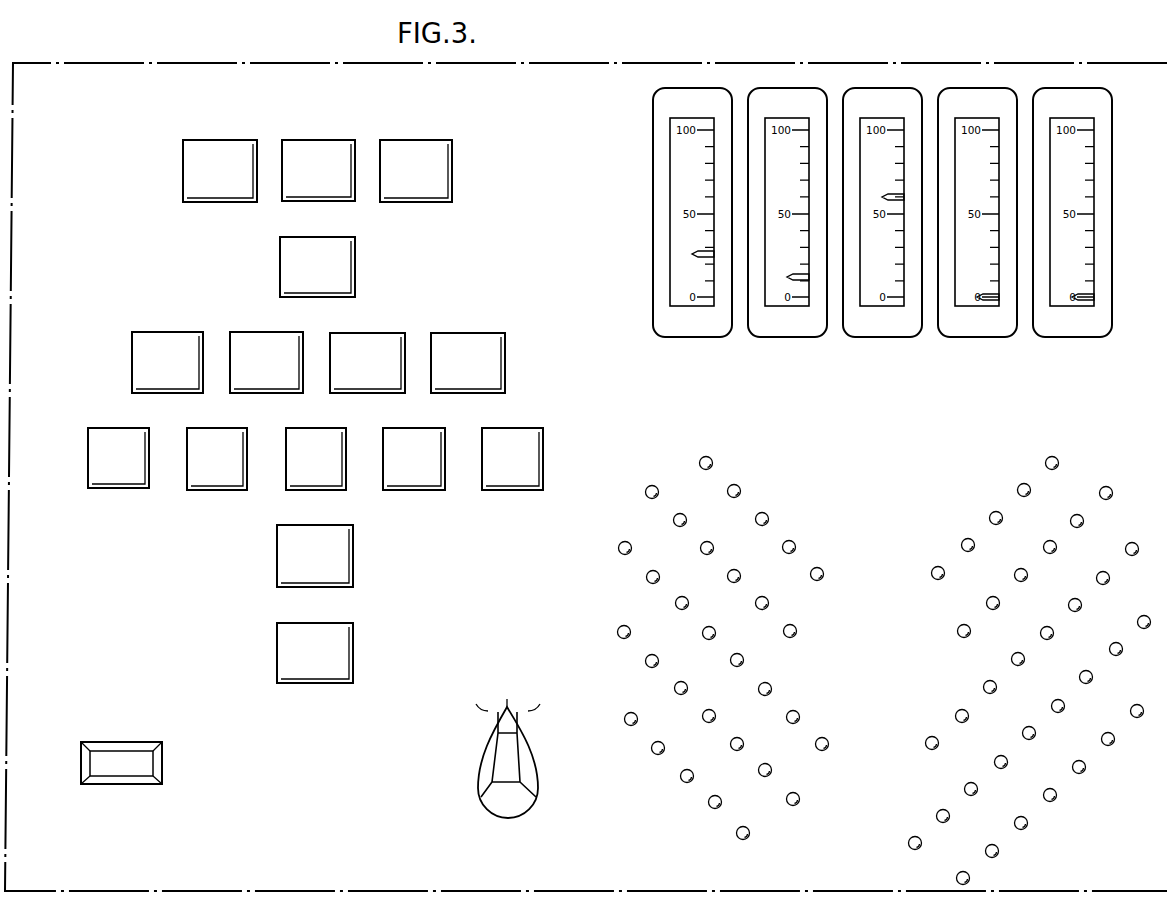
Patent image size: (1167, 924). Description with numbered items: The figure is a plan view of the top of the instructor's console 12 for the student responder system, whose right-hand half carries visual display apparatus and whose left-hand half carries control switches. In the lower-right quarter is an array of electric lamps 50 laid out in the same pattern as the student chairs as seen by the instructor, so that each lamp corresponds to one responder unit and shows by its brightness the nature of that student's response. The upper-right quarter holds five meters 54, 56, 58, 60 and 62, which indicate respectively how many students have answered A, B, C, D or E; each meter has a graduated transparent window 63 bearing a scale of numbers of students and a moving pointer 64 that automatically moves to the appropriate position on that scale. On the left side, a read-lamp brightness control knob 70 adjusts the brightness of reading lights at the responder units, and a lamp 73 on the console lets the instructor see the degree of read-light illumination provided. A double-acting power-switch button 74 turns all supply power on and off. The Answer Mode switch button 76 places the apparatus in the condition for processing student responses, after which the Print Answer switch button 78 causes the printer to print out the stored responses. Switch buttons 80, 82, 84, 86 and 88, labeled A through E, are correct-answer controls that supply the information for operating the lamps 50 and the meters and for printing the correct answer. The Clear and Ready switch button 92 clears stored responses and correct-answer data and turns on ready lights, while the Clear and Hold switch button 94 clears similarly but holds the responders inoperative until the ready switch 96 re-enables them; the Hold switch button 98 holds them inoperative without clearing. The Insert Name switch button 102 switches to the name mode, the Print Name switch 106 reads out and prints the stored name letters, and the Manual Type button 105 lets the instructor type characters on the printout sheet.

The control panel 12 is at (627, 62).
The electric lamps 50 is at (765, 513).
The meter 54 is at (676, 212).
The meter 56 is at (778, 81).
The meter 58 is at (876, 81).
The meter 60 is at (963, 81).
The meter 62 is at (1093, 212).
The graduated transparent window 63 is at (680, 164).
The moving pointer 64 is at (1082, 297).
The read-lamp brightness control knob 70 is at (488, 759).
The lamp 73 is at (116, 751).
The double-acting power-switch button 74 is at (354, 660).
The Answer Mode switch button 76 is at (356, 276).
The Print Answer switch button 78 is at (354, 551).
The switch button 80 is at (110, 434).
The switch button 82 is at (219, 434).
The switch button 84 is at (319, 434).
The switch button 86 is at (419, 434).
The switch button 88 is at (514, 434).
The Clear and Ready switch button 92 is at (152, 336).
The Clear and Hold switch button 94 is at (260, 336).
The ready switch 96 is at (467, 336).
The Hold switch button 98 is at (362, 336).
The Insert Name switch button 102 is at (308, 145).
The Manual Type button 105 is at (215, 146).
The Print Name switch 106 is at (413, 145).